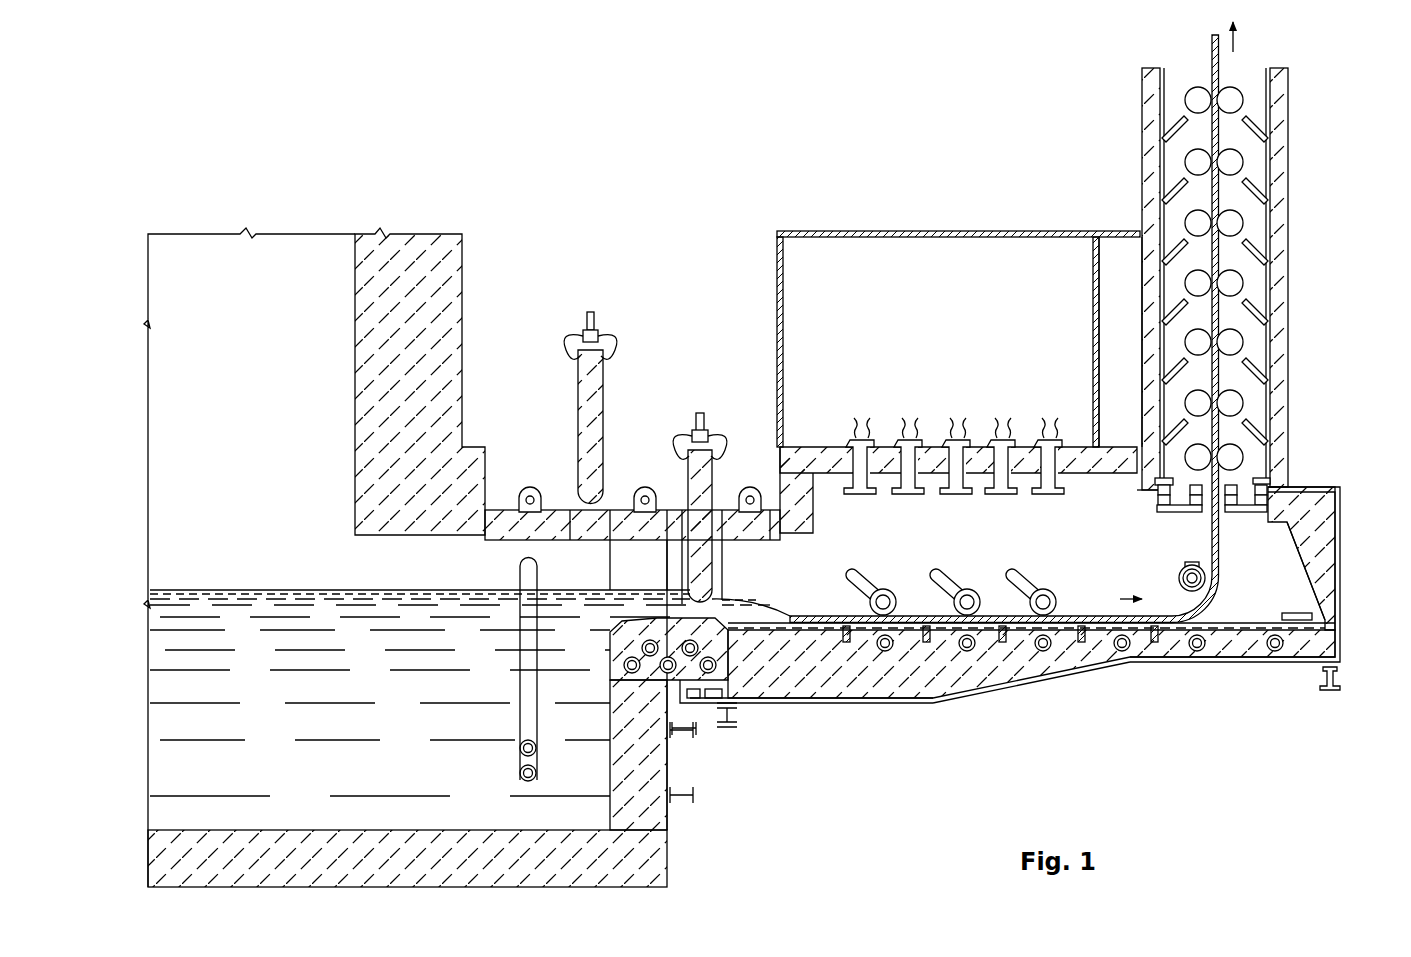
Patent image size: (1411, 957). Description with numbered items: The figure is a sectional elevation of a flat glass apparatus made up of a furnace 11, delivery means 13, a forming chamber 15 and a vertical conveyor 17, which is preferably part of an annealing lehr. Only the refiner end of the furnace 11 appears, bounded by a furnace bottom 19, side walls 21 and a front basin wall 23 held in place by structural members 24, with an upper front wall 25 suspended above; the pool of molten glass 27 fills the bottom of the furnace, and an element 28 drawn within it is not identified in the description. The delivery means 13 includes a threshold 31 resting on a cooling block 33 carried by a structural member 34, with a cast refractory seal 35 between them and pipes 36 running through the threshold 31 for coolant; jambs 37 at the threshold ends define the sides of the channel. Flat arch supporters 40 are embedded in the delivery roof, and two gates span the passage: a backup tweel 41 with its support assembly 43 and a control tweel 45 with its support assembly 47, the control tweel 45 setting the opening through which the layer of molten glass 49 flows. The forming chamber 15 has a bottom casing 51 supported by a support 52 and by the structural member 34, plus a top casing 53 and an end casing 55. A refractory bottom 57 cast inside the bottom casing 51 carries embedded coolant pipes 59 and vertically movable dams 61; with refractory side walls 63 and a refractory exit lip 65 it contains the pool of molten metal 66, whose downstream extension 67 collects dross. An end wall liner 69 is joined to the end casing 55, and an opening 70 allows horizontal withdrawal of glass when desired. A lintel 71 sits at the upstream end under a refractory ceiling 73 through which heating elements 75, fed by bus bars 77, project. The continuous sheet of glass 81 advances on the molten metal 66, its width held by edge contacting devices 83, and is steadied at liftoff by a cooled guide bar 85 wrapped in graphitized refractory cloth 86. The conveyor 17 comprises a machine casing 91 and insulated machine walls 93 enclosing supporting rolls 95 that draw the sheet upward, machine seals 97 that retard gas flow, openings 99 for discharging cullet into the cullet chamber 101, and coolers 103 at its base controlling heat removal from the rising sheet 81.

The furnace 11 is at (476, 252).
The delivery means 13 is at (687, 272).
The forming chamber 15 is at (963, 210).
The vertical conveyor 17 is at (1134, 124).
The furnace bottom 19 is at (385, 887).
The side walls 21 is at (242, 474).
The front basin wall 23 is at (670, 772).
The structural members 24 is at (695, 797).
The upper front wall 25 is at (463, 354).
The pool of molten glass 27 is at (336, 733).
The thermocouple 28 is at (538, 770).
The threshold 31 is at (632, 676).
The cooling block 33 is at (696, 732).
The structural member 34 is at (738, 725).
The cast refractory seal 35 is at (740, 700).
The conduits or pipes 36 is at (641, 650).
The jambs 37 is at (724, 565).
The flat arch supporters 40 is at (530, 490).
The backup tweel 41 is at (604, 397).
The support assembly 43 is at (600, 336).
The control tweel 45 is at (714, 490).
The support assembly 47 is at (708, 436).
The layer of molten glass 49 is at (728, 600).
The bottom casing 51 is at (1008, 690).
The support leg 52 is at (1341, 684).
The top casing 53 is at (777, 292).
The end casing 55 is at (1340, 530).
The refractory bottom 57 is at (1052, 678).
The pipes 59 is at (1125, 652).
The dams or weirs 61 is at (1003, 643).
The refractory side walls 63 is at (826, 609).
The refractory exit lip 65 is at (1336, 626).
The pool of molten metal 66 is at (1228, 640).
The extension 67 is at (1292, 612).
The end wall liner 69 is at (1298, 548).
The opening 70 is at (1326, 582).
The lintel 71 is at (814, 518).
The ceiling or roof 73 is at (800, 448).
The heating elements 75 is at (1010, 495).
The bus bars 77 is at (960, 440).
The continuous sheet of glass 81 is at (1219, 542).
The edge contacting devices 83 is at (960, 592).
The guide bar 85 is at (1180, 572).
The graphitized refractory cloth 86 is at (1180, 580).
The machine casing 91 is at (1268, 268).
The machine walls 93 is at (1289, 93).
The supporting rolls 95 is at (1205, 352).
The machine seals 97 is at (1258, 120).
The openings 99 is at (1140, 298).
The cullet chamber 101 is at (1138, 392).
The coolers 103 is at (1178, 514).